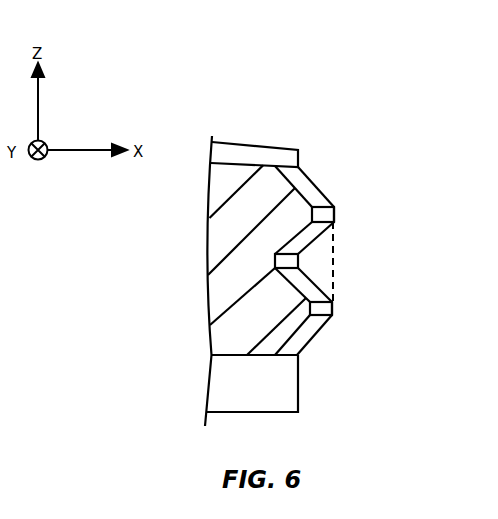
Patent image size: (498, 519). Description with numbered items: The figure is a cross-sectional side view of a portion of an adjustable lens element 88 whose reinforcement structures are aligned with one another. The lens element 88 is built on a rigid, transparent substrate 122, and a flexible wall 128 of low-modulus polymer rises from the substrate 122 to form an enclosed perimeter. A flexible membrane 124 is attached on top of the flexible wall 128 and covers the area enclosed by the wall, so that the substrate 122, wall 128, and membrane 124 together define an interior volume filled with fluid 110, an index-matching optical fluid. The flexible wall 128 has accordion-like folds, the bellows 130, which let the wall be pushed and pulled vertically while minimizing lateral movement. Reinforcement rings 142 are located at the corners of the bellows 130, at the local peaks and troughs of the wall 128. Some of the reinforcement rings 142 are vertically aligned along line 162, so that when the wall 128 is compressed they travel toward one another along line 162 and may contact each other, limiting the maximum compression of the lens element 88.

The adjustable lens element 88 is at (262, 92).
The flexible membrane 124 is at (299, 153).
The flexible wall 128 is at (303, 180).
The bellows 130 is at (336, 203).
The reinforcement rings 142 is at (299, 262).
The line 162 is at (334, 273).
The fluid 110 is at (277, 342).
The substrate 122 is at (287, 394).